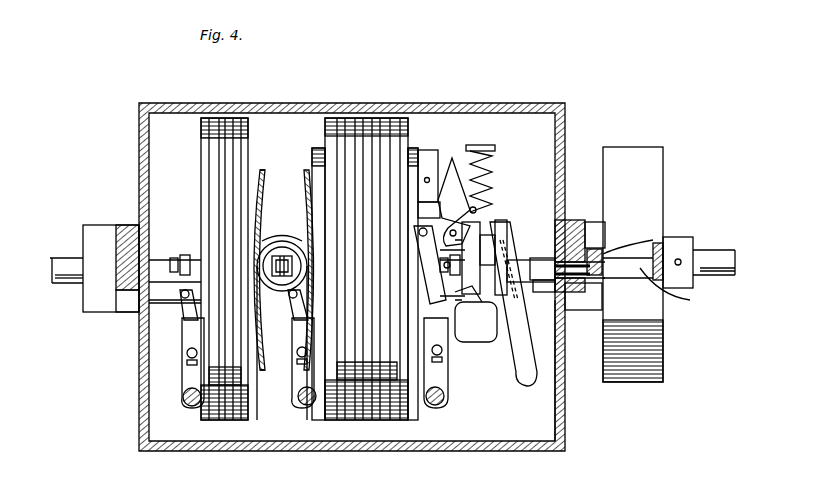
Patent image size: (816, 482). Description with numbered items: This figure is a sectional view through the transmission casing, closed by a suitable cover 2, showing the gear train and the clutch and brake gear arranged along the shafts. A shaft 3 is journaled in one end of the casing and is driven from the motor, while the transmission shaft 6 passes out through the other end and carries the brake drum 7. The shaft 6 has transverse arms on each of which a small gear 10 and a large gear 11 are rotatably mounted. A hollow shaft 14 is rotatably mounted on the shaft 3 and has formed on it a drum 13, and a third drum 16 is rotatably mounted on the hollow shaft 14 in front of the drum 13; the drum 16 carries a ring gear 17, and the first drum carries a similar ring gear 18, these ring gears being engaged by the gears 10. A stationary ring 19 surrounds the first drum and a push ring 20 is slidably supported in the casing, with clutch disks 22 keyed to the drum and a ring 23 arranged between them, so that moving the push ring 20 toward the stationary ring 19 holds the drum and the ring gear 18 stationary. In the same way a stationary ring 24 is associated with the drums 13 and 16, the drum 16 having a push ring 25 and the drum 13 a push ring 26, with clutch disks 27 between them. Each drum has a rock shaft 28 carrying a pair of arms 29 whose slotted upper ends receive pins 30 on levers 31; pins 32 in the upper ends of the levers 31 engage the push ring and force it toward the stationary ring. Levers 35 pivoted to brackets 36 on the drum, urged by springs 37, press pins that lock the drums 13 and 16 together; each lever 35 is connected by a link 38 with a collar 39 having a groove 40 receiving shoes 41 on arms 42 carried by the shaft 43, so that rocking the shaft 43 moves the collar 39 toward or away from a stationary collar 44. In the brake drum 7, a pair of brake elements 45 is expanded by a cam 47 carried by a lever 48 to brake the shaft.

The cover 2 is at (494, 103).
The shaft 3 is at (56, 283).
The transmission shaft 6 is at (724, 250).
The brake drum 7 is at (566, 414).
The small gear 10 is at (288, 248).
The large gear 11 is at (276, 232).
The drum 13 is at (414, 148).
The hollow shaft 14 is at (497, 273).
The third drum 16 is at (317, 148).
The ring gear 17 is at (302, 178).
The ring gear 18 is at (258, 180).
The stationary ring 19 is at (243, 118).
The push ring 20 is at (208, 118).
The clutch disks 22 is at (218, 150).
The ring 23 is at (227, 118).
The stationary ring 24 is at (368, 118).
The push ring 25 is at (340, 118).
The push ring 26 is at (396, 118).
The clutch disks 27 is at (357, 118).
The rock shaft 28 is at (185, 398).
The arms 29 is at (190, 376).
The pins 30 is at (188, 354).
The levers 31 is at (186, 318).
The pins 32 is at (188, 254).
The levers 35 is at (446, 190).
The brackets 36 is at (430, 160).
The springs 37 is at (490, 170).
The link 38 is at (478, 240).
The collar 39 is at (490, 240).
The groove 40 is at (505, 230).
The shoes 41 is at (558, 228).
The arms 42 is at (510, 338).
The shaft 43 is at (525, 385).
The stationary collar 44 is at (542, 292).
The brake elements 45 is at (636, 252).
The cam 47 is at (655, 278).
The lever 48 is at (592, 310).